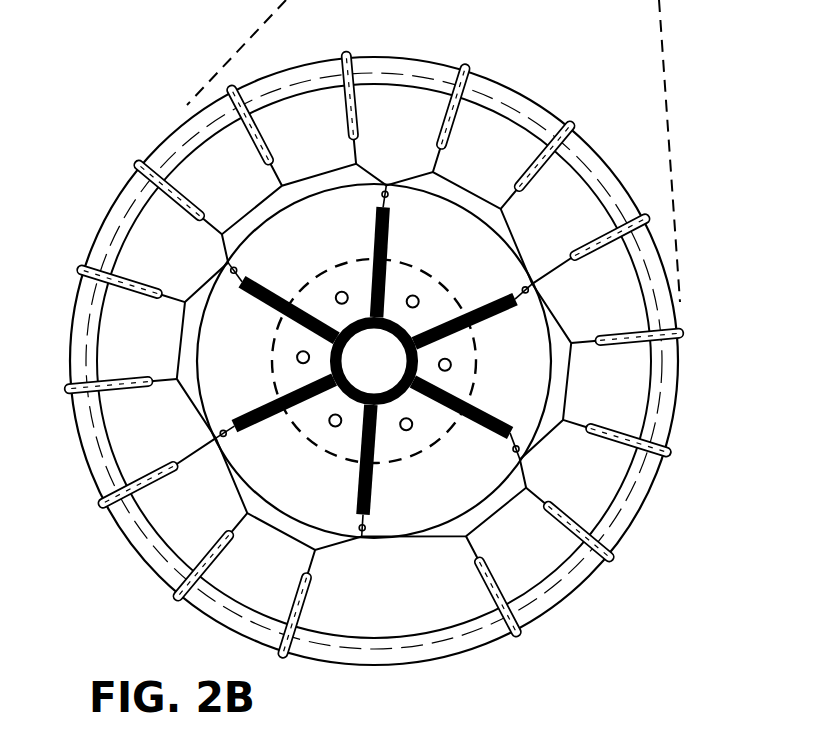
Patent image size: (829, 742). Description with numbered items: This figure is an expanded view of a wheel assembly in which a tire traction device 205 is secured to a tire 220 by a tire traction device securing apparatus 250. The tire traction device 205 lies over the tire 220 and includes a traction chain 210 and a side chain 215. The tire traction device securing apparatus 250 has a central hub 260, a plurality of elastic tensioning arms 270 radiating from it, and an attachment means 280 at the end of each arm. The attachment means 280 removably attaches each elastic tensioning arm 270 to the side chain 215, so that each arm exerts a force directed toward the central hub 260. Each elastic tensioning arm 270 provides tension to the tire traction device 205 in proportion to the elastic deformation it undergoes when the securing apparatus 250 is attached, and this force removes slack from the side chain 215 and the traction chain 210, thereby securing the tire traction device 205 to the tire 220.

The tire traction device 205 is at (172, 74).
The traction chain 210 is at (172, 157).
The side chain 215 is at (242, 213).
The tire 220 is at (103, 217).
The tire traction device securing apparatus 250 is at (734, 338).
The central hub 260 is at (416, 368).
The elastic tensioning arm 270 is at (482, 315).
The attachment means 280 is at (522, 300).